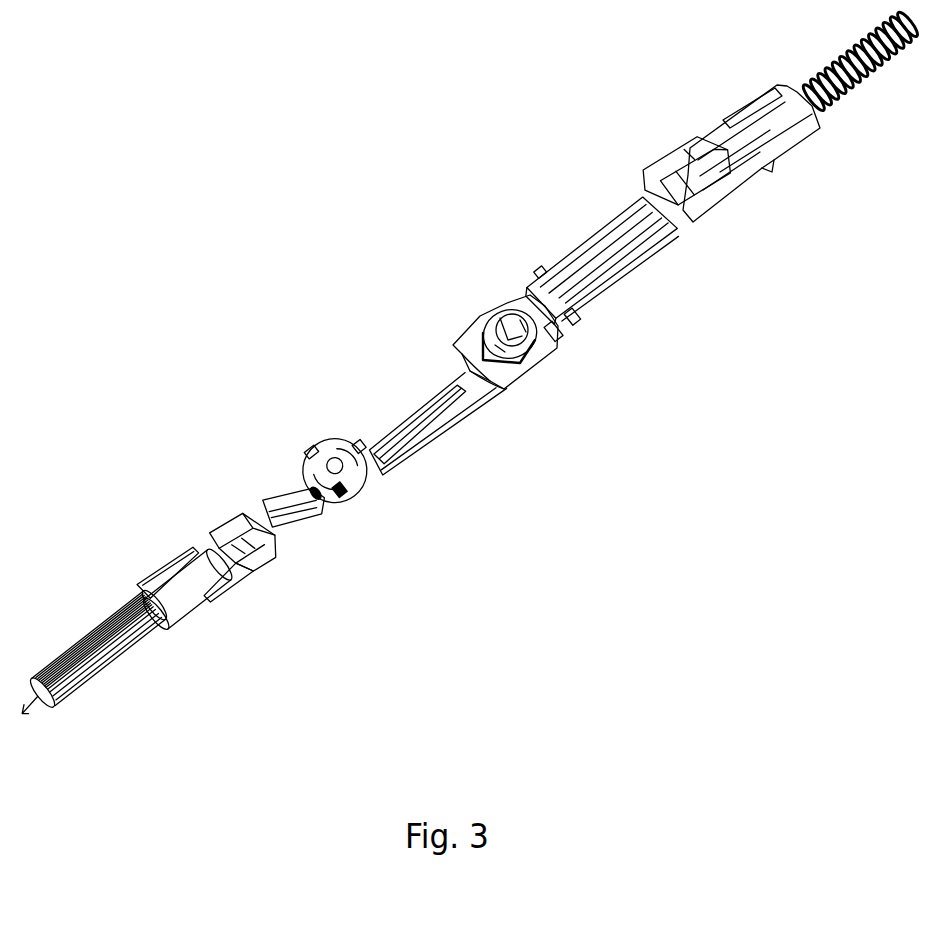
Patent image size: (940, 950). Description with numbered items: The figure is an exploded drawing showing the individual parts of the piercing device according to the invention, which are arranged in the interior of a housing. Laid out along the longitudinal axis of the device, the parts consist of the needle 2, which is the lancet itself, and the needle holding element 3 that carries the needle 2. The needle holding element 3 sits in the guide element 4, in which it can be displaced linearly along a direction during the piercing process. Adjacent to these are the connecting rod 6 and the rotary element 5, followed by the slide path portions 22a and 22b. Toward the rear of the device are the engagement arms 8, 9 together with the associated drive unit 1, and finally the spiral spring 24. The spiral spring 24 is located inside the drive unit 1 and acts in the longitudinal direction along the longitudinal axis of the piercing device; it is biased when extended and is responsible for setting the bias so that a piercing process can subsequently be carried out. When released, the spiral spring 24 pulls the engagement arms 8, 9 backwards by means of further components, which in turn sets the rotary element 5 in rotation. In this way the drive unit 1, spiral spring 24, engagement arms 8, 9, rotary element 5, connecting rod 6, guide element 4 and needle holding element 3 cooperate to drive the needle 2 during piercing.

The drive unit 1 is at (803, 200).
The needle 2 is at (110, 663).
The needle holding element 3 is at (182, 597).
The guide element 4 is at (245, 585).
The rotary element 5 is at (360, 475).
The connecting rod 6 is at (298, 528).
The engagement arm 8 is at (710, 205).
The engagement arm 9 is at (652, 173).
The slide path portion 22a is at (535, 350).
The slide path portion 22b is at (495, 310).
The spiral spring 24 is at (870, 82).